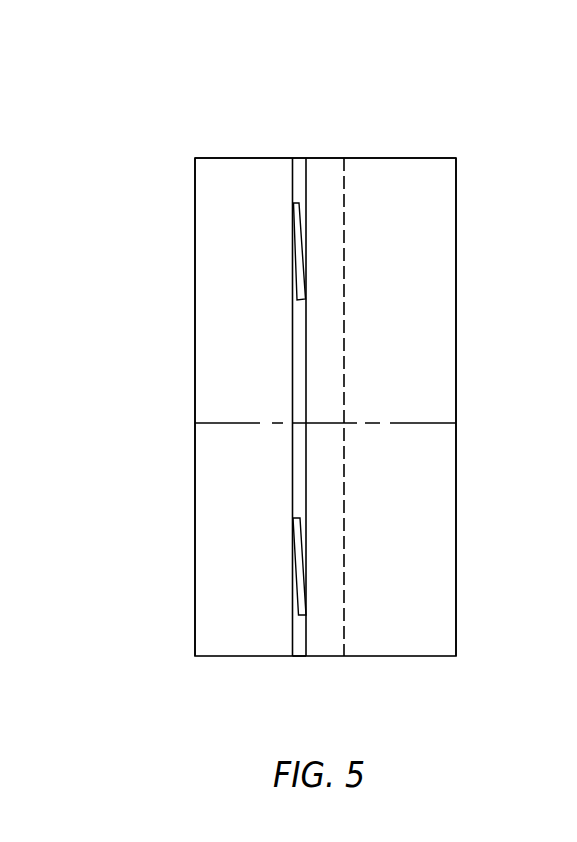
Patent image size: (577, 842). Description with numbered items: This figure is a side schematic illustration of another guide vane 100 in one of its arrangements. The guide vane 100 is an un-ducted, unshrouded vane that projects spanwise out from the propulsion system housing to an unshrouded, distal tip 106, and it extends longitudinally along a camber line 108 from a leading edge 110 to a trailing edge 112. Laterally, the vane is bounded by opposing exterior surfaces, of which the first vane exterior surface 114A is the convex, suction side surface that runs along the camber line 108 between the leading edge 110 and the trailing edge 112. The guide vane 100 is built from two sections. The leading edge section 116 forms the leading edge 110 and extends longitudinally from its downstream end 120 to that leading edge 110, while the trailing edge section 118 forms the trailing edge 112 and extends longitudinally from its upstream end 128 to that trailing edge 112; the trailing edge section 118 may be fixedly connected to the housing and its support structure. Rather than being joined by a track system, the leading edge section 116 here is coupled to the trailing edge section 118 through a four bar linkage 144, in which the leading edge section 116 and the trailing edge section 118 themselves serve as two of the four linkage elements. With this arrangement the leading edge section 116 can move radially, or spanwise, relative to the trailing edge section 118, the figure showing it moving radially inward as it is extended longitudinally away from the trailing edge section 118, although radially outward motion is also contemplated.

The guide vane 100 is at (449, 105).
The distal tip 106 is at (232, 157).
The four bar linkage 144 is at (298, 145).
The downstream end 120 is at (345, 192).
The trailing edge 112 is at (456, 264).
The leading edge 110 is at (195, 285).
The leading edge section 116 is at (170, 358).
The trailing edge section 118 is at (471, 346).
The camber line 108 is at (430, 423).
The first vane exterior surface 114A is at (277, 297).
The upstream end 128 is at (307, 643).